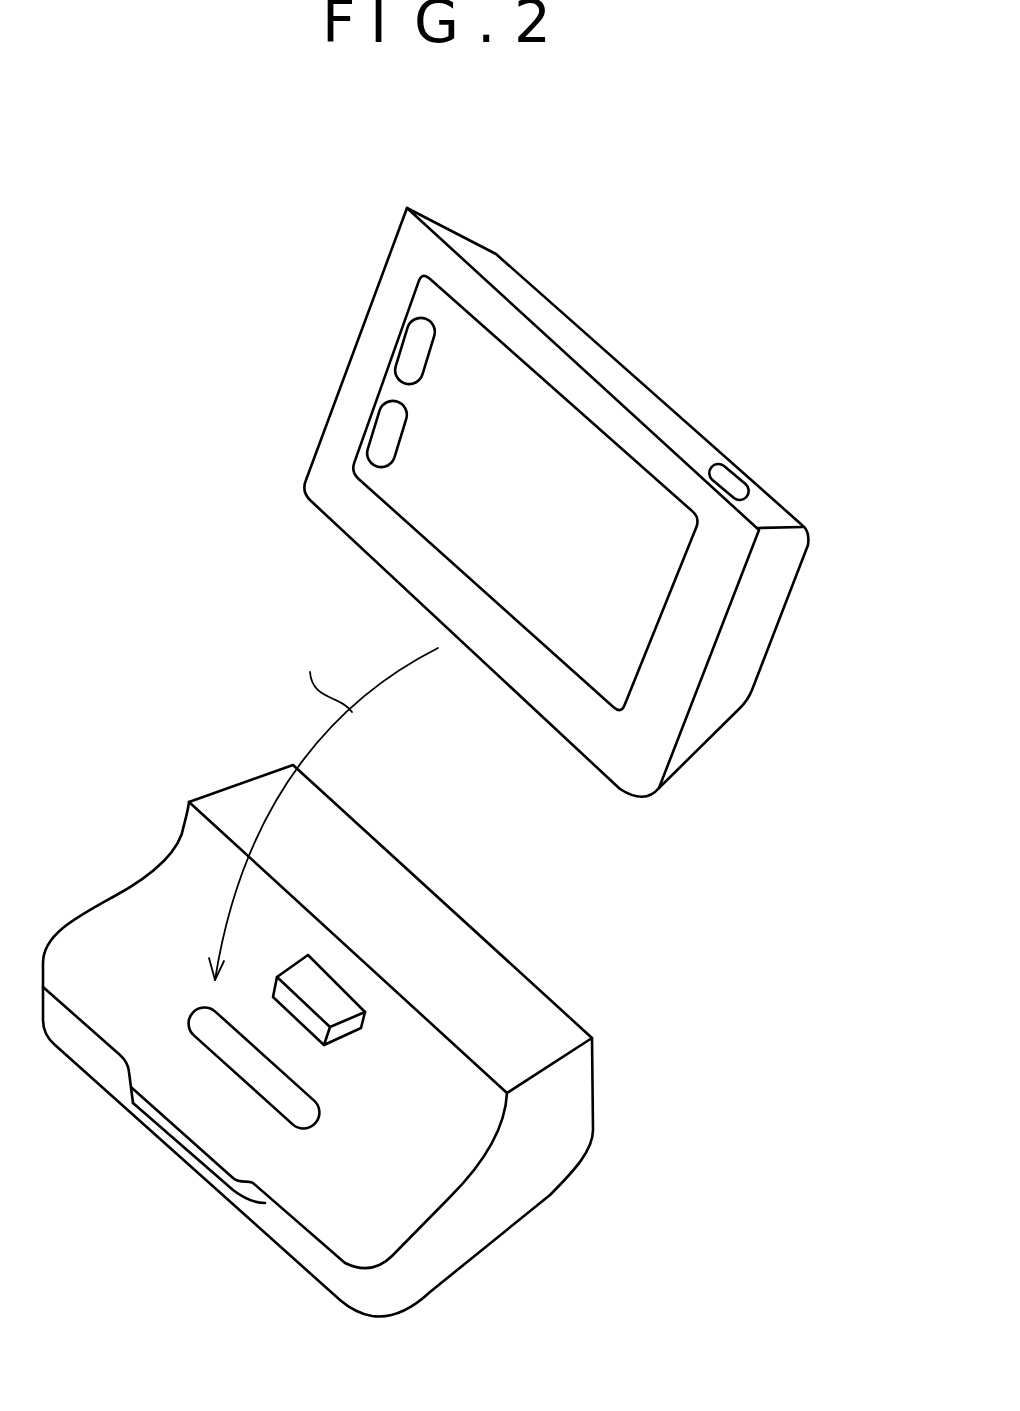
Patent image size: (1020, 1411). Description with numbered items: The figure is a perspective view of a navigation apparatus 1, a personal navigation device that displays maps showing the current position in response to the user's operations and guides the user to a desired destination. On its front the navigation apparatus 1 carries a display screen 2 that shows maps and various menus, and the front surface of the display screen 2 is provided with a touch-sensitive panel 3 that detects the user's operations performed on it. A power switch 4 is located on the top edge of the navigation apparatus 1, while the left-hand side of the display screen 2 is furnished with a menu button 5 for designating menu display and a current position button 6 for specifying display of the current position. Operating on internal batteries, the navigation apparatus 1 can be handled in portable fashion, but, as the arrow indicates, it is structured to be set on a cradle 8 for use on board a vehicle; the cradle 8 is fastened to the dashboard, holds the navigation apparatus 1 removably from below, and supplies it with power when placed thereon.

The navigation apparatus 1 is at (140, 313).
The display screen 2 is at (538, 383).
The touch-sensitive panel 3 is at (597, 453).
The power switch 4 is at (727, 480).
The menu button 5 is at (417, 350).
The current position button 6 is at (388, 437).
The cradle 8 is at (572, 1110).